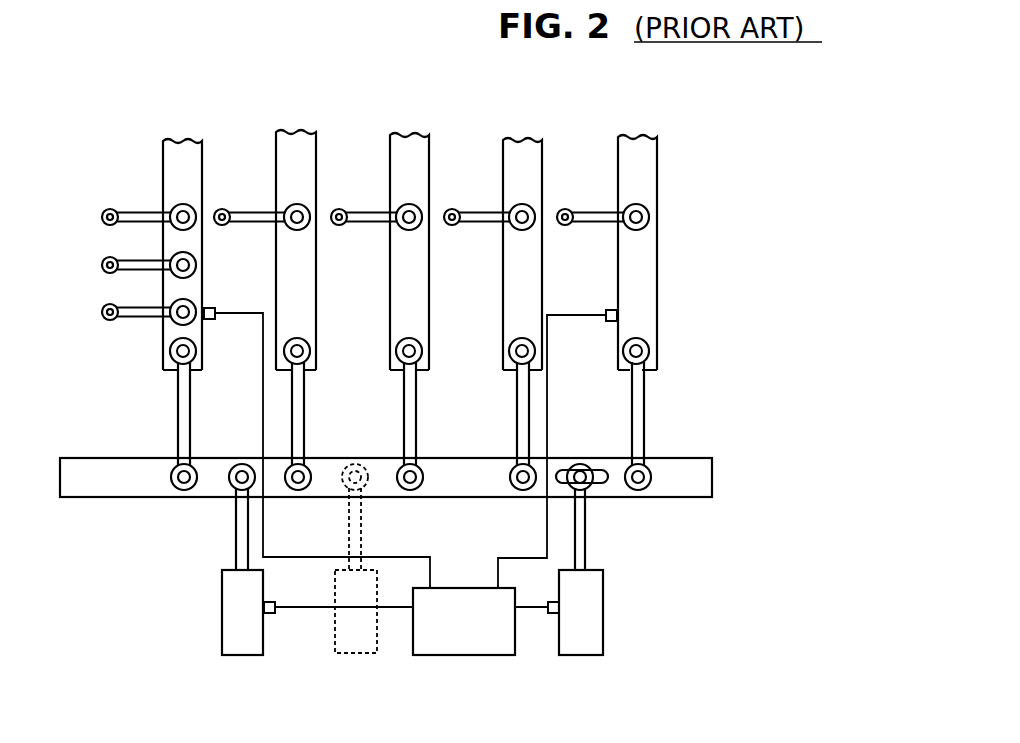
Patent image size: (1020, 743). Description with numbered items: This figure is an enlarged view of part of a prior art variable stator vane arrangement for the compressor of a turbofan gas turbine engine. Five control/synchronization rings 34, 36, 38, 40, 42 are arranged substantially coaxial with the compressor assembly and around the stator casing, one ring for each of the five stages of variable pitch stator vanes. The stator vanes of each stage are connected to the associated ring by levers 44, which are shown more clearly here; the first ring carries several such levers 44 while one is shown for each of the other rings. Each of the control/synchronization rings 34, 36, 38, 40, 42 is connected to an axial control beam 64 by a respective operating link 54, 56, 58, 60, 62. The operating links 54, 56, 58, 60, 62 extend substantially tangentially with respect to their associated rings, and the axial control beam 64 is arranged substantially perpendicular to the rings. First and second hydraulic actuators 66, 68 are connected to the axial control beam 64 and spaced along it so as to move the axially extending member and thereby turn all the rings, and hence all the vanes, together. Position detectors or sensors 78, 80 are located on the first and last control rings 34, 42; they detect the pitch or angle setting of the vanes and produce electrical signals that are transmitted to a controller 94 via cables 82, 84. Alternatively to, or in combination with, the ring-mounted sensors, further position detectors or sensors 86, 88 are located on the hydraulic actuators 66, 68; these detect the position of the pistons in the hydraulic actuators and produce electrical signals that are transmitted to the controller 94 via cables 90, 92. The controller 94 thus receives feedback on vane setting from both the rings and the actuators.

The control/synchronization ring 34 is at (175, 160).
The control/synchronization ring 36 is at (287, 164).
The control/synchronization ring 38 is at (399, 161).
The control/synchronization ring 40 is at (511, 164).
The control/synchronization ring 42 is at (627, 166).
The levers 44 is at (128, 316).
The operating link 54 is at (191, 422).
The operating link 56 is at (305, 422).
The operating link 58 is at (417, 422).
The operating link 60 is at (530, 422).
The operating link 62 is at (637, 406).
The axial control beam 64 is at (437, 480).
The first hydraulic actuator 66 is at (232, 627).
The second hydraulic actuator 68 is at (590, 620).
The position detector/sensor 78 is at (214, 322).
The position detector/sensor 80 is at (608, 322).
The cable 82 is at (265, 536).
The cable 84 is at (547, 516).
The position detector/sensor 86 is at (273, 604).
The position detector/sensor 88 is at (552, 604).
The cable 90 is at (297, 611).
The cable 92 is at (528, 611).
The controller 94 is at (460, 610).